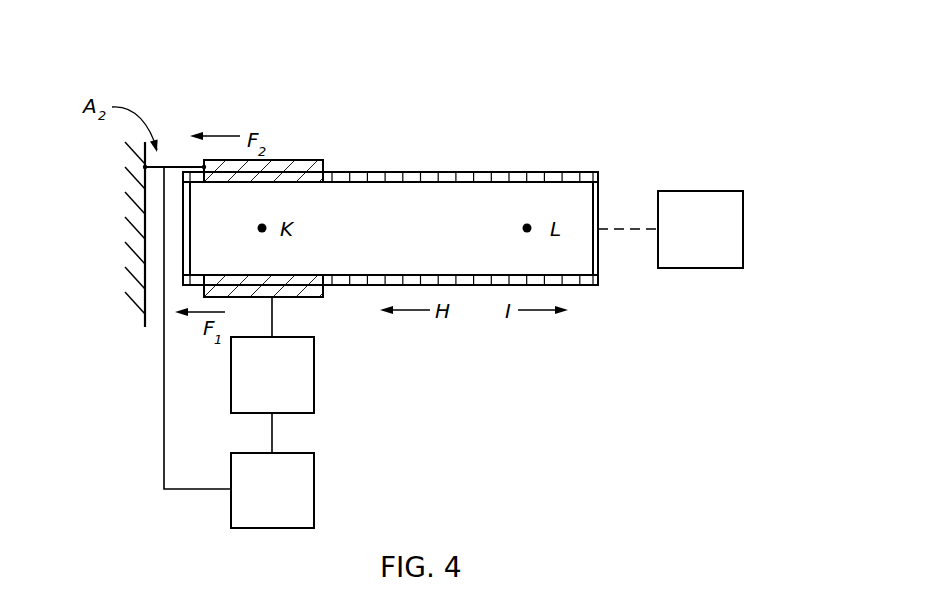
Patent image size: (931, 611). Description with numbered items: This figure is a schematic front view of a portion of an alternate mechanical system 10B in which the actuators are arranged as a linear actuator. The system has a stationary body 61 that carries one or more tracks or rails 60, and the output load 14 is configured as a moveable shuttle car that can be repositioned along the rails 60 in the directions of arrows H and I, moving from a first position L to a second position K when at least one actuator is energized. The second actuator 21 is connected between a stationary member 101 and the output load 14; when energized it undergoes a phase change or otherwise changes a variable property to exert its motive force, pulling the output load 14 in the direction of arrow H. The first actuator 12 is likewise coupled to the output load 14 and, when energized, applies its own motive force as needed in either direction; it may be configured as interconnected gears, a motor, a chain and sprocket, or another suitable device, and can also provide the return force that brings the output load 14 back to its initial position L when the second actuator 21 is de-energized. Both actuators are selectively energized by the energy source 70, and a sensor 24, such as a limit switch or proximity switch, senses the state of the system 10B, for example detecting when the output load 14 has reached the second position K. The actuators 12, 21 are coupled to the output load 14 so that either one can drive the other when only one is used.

The mechanical system 10B is at (533, 70).
The stationary member 101 is at (135, 300).
The second actuator 21 is at (177, 166).
The output load 14 is at (318, 160).
The body 61 is at (391, 197).
The rails 60 is at (569, 172).
The sensor 24 is at (743, 205).
The first actuator 12 is at (314, 360).
The energy source 70 is at (314, 480).